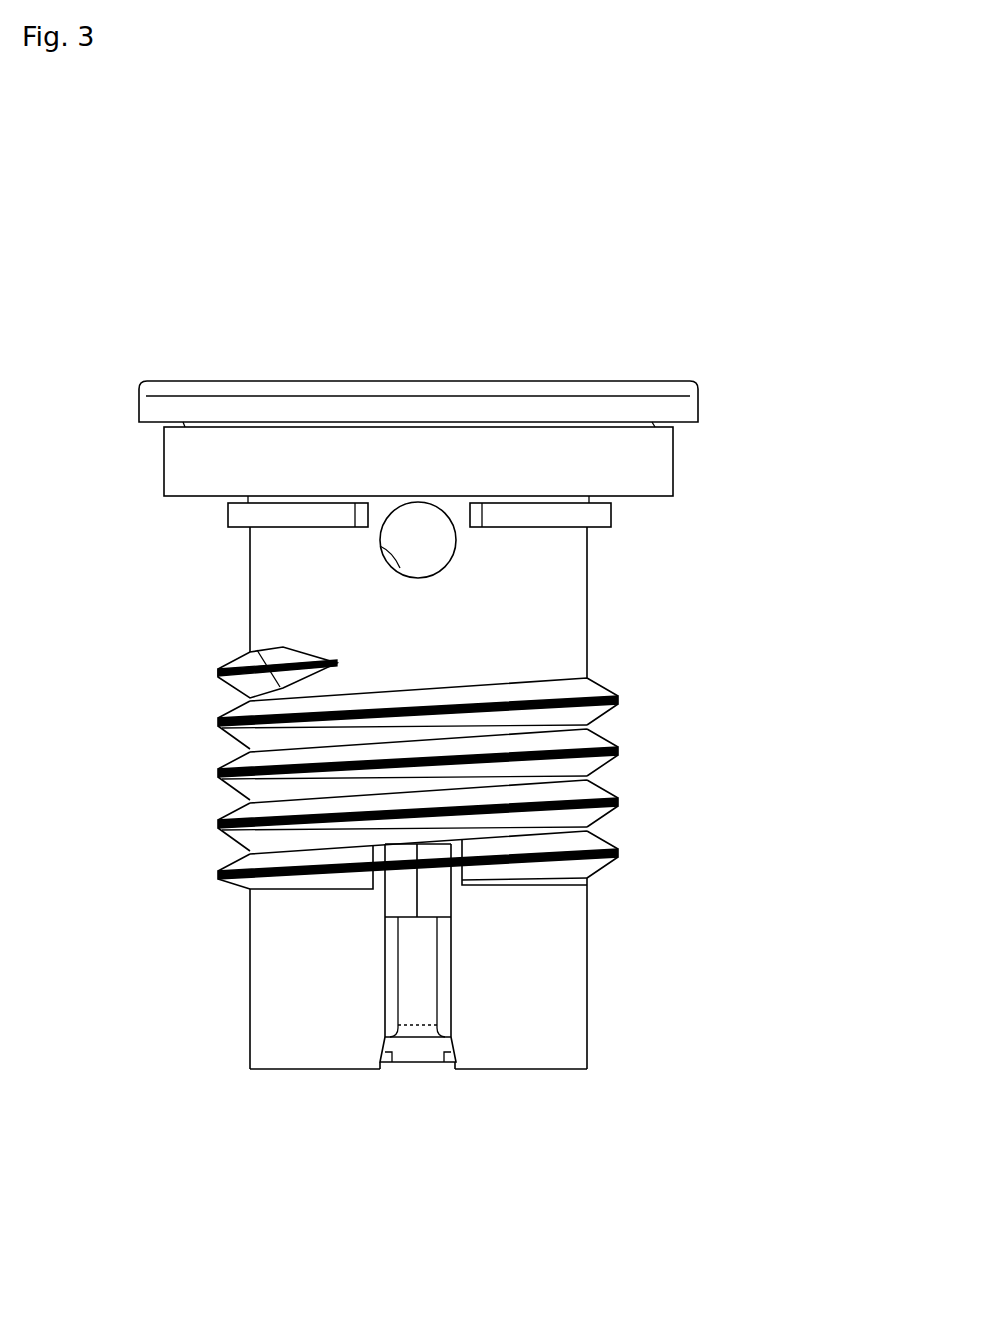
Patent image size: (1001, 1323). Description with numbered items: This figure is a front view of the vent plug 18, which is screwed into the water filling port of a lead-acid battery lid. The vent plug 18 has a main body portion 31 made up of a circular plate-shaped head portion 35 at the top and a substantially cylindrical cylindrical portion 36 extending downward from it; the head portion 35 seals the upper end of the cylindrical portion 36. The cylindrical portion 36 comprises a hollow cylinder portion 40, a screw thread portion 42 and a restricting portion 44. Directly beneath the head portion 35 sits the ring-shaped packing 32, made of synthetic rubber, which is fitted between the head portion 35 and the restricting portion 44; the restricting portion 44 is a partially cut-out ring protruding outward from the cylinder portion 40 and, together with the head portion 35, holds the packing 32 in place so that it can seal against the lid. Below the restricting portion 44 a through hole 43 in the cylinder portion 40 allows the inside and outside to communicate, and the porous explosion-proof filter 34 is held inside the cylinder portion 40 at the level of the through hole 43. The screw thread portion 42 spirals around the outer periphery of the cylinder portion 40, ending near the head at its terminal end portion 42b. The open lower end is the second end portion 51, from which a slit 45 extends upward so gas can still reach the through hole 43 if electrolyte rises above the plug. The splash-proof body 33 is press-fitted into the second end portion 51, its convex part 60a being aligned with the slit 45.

The vent plug 18 is at (624, 258).
The head portion 35 is at (700, 396).
The packing 32 is at (674, 465).
The restricting portion 44 is at (611, 517).
The filter 34 is at (430, 552).
The through hole 43 is at (380, 546).
The main body portion 31 is at (598, 610).
The terminal end portion 42b is at (338, 663).
The screw thread portion 42 is at (620, 750).
The cylinder portion 40 is at (598, 940).
The cylindrical portion 36 is at (575, 1002).
The second end portion 51 is at (540, 1072).
The slit 45 is at (405, 1037).
The splash-proof body 33 is at (420, 1010).
The convex part 60a is at (413, 1058).